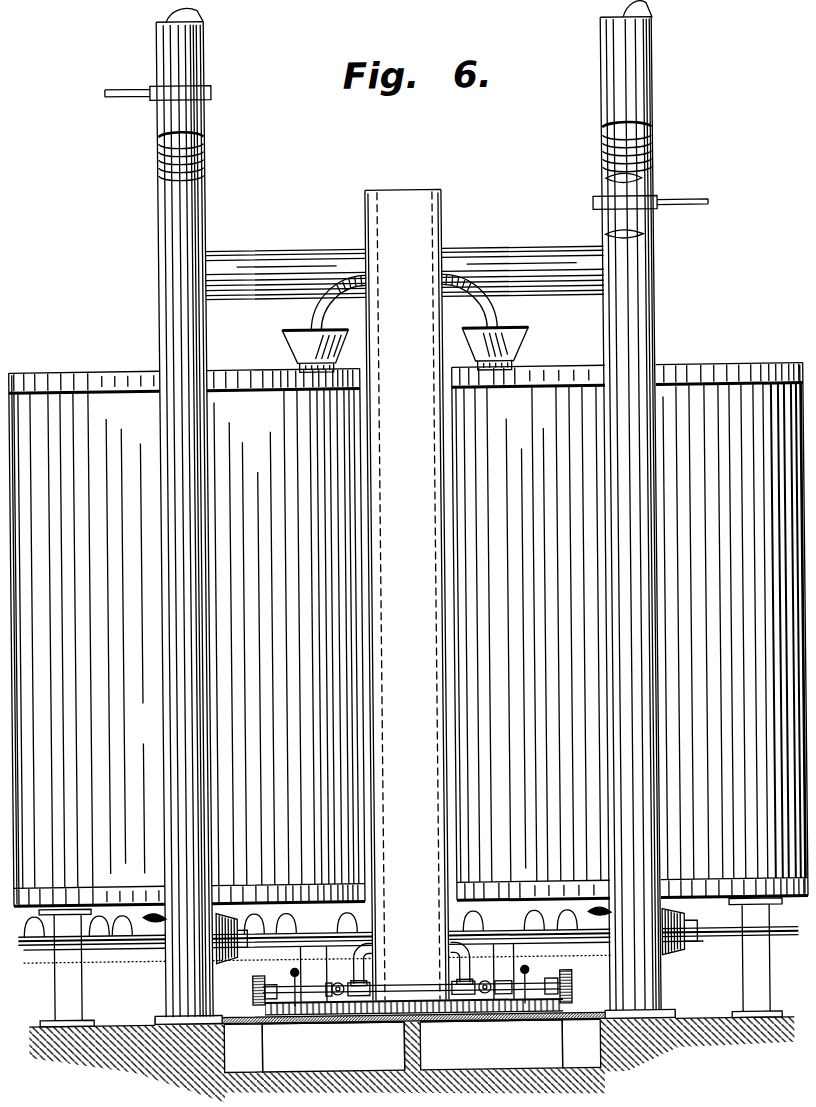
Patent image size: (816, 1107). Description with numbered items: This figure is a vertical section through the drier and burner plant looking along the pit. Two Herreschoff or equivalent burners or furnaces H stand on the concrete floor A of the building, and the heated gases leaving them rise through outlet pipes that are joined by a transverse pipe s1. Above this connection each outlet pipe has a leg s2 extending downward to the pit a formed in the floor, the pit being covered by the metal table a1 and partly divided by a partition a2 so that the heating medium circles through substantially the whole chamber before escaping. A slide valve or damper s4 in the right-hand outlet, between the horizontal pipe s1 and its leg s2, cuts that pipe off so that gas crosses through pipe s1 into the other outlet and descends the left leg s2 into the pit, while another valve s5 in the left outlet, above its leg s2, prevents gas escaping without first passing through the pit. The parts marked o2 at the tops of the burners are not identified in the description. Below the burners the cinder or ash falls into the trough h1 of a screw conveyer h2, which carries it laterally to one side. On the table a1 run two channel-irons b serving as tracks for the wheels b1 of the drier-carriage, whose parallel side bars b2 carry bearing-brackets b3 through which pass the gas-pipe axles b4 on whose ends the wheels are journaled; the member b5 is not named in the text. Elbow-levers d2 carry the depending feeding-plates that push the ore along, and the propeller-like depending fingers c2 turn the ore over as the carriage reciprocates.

The transverse pipe s1 is at (302, 256).
The leg s2 is at (668, 329).
The valve or damper s4 is at (699, 204).
The valve s5 is at (134, 86).
The funnel o2 is at (533, 349).
The burner or furnace H is at (115, 367).
The trough h1 is at (149, 949).
The screw conveyer h2 is at (108, 948).
The floor A is at (177, 1064).
The channel-iron b is at (558, 1009).
The wheel b1 is at (555, 979).
The side bar b2 is at (555, 1034).
The bearing-bracket b3 is at (268, 980).
The axle b4 is at (419, 985).
The elbow pipe b5 is at (352, 961).
The elbow-lever d2 is at (299, 968).
The pit a is at (412, 1046).
The table a1 is at (346, 1023).
The partition a2 is at (396, 1046).
The depending finger c2 is at (469, 1023).